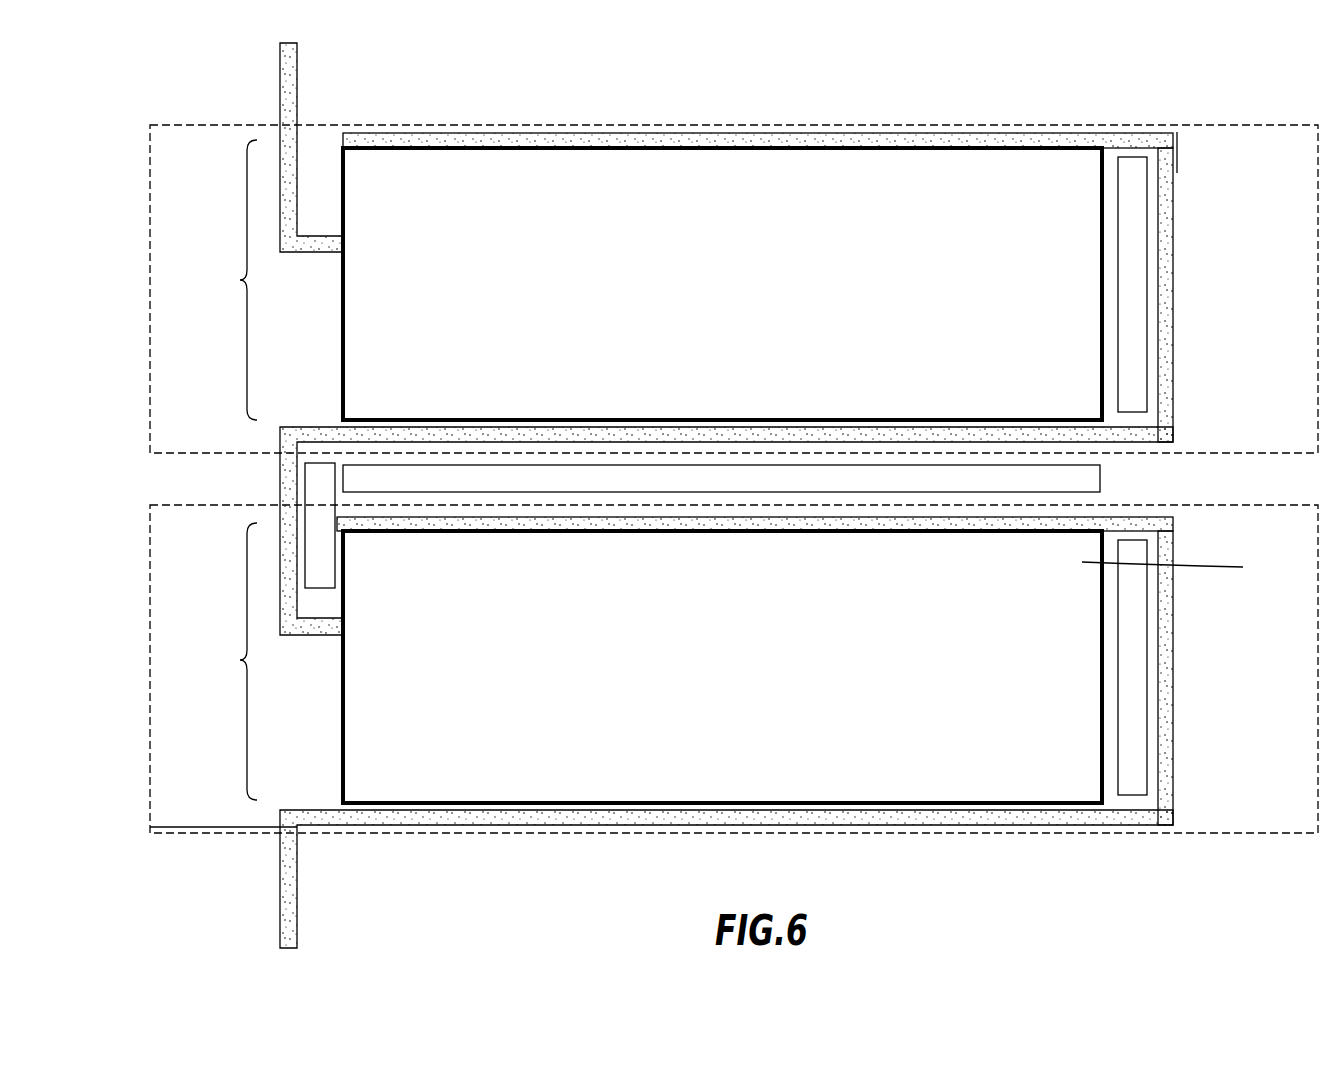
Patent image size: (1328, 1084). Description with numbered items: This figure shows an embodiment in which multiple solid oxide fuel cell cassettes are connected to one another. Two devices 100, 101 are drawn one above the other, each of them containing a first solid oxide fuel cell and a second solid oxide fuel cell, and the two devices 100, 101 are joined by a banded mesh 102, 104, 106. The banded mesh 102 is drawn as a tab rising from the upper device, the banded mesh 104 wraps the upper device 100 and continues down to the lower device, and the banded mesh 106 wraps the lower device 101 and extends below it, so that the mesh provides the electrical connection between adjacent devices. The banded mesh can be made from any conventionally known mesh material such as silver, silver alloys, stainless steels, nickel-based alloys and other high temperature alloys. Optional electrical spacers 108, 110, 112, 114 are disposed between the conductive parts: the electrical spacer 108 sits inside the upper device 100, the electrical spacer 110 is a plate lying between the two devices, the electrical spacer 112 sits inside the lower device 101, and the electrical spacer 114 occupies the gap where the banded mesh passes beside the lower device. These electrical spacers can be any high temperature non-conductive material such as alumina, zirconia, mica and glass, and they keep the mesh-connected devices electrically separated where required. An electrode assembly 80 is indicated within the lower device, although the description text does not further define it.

The electrode assembly 80 is at (1181, 553).
The device 100 is at (240, 280).
The device 101 is at (240, 660).
The banded mesh 102 is at (282, 68).
The banded mesh 104 is at (1102, 150).
The banded mesh 106 is at (1173, 617).
The electrical spacer 108 is at (1147, 253).
The electrical spacer 110 is at (1100, 478).
The electrical spacer 112 is at (1147, 708).
The electrical spacer 114 is at (308, 480).